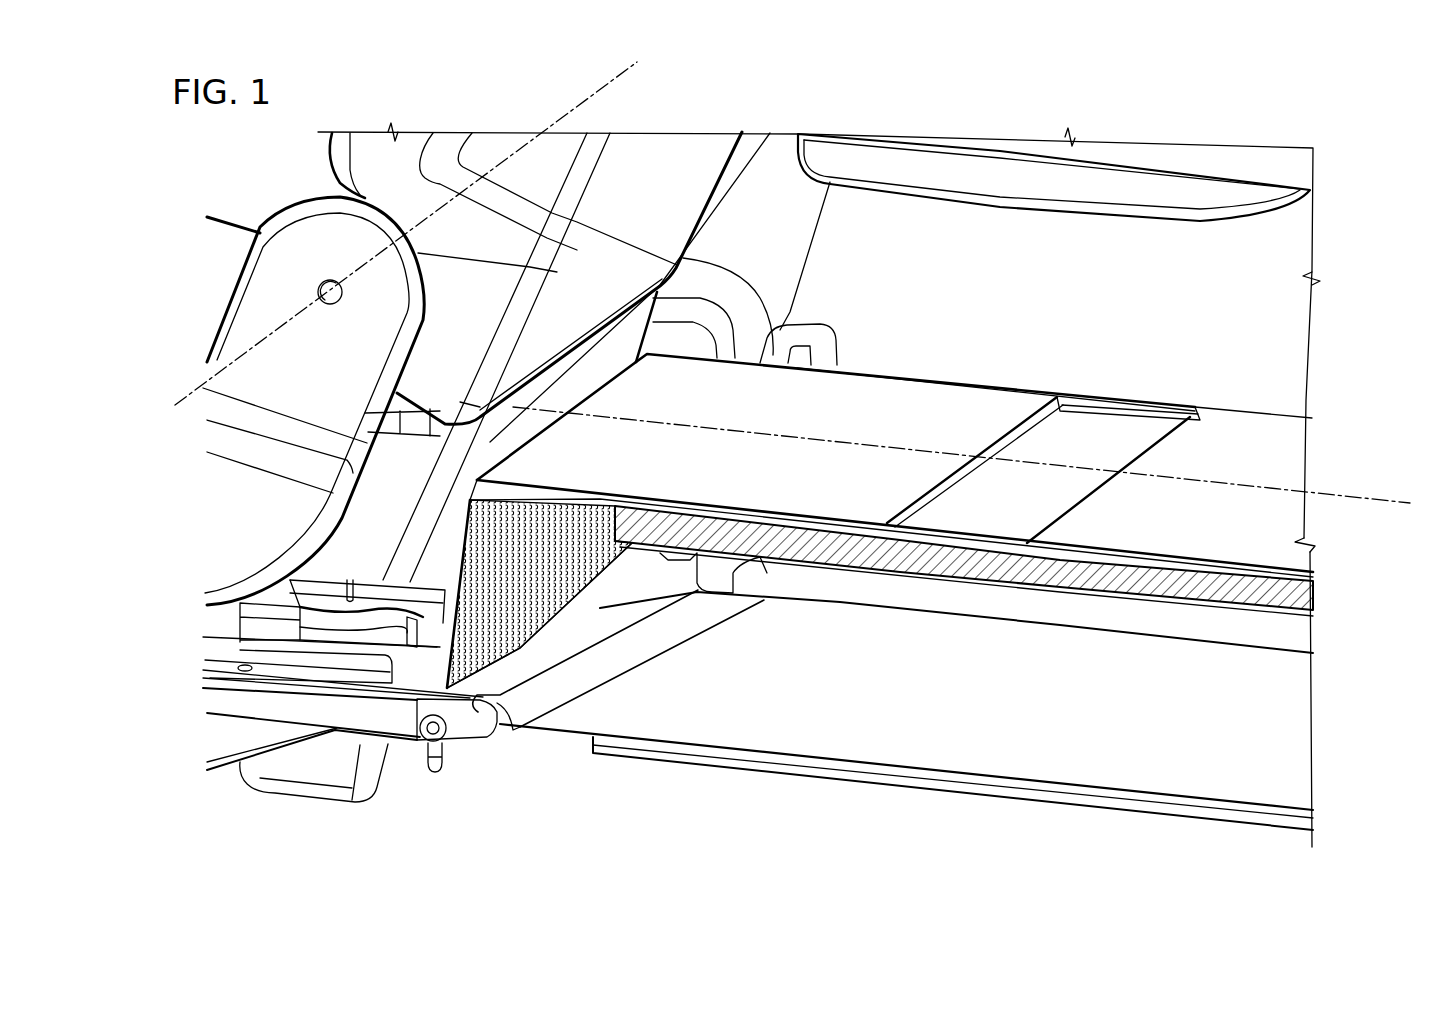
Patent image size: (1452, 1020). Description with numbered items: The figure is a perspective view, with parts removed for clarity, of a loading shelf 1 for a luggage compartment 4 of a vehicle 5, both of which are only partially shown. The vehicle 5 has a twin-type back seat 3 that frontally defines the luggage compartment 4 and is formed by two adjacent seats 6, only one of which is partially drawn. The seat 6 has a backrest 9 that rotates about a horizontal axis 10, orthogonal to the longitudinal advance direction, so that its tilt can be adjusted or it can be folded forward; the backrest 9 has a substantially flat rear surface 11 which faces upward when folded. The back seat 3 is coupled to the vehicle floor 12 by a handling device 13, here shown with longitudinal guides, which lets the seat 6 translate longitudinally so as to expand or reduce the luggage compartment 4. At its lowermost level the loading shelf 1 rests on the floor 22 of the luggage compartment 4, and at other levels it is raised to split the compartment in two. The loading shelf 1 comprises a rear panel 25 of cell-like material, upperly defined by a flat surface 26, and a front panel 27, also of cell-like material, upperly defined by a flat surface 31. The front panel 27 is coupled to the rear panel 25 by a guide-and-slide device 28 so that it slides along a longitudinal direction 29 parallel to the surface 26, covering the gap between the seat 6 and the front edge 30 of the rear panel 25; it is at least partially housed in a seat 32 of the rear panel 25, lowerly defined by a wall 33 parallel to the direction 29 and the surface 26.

The loading shelf 1 is at (1293, 327).
The back seat 3 is at (733, 170).
The luggage compartment 4 is at (1267, 225).
The vehicle 5 is at (1192, 160).
The seat 6 is at (592, 185).
The backrest 9 is at (597, 232).
The horizontal axis 10 is at (212, 330).
The rear surface 11 is at (827, 183).
The vehicle floor 12 is at (397, 673).
The handling device 13 is at (213, 690).
The floor 22 is at (820, 727).
The rear panel 25 is at (1280, 434).
The flat surface 26 is at (1258, 507).
The front panel 27 is at (953, 397).
The guide-and-slide device 28 is at (1130, 395).
The longitudinal direction 29 is at (1367, 500).
The front edge 30 is at (613, 487).
The flat surface 31 is at (878, 403).
The seat 32 is at (1063, 430).
The wall 33 is at (1133, 435).